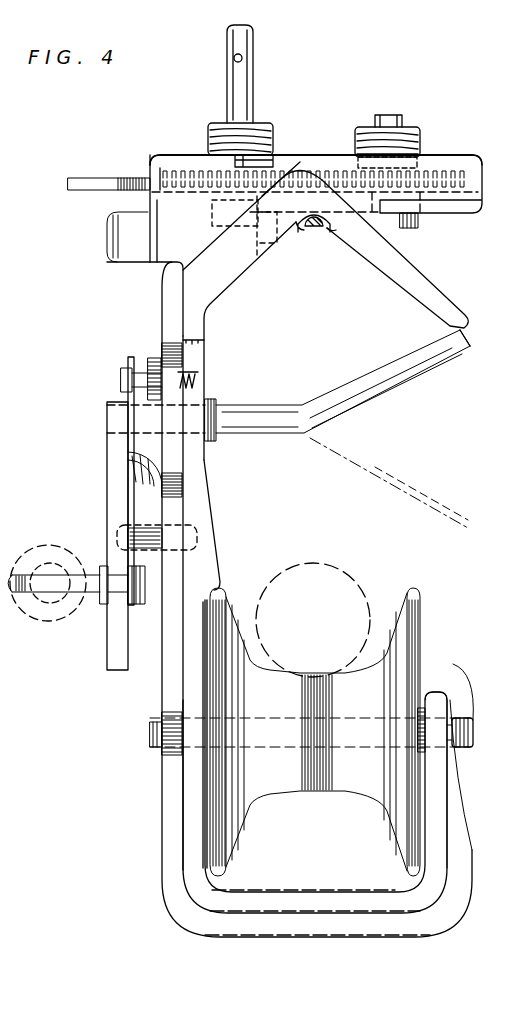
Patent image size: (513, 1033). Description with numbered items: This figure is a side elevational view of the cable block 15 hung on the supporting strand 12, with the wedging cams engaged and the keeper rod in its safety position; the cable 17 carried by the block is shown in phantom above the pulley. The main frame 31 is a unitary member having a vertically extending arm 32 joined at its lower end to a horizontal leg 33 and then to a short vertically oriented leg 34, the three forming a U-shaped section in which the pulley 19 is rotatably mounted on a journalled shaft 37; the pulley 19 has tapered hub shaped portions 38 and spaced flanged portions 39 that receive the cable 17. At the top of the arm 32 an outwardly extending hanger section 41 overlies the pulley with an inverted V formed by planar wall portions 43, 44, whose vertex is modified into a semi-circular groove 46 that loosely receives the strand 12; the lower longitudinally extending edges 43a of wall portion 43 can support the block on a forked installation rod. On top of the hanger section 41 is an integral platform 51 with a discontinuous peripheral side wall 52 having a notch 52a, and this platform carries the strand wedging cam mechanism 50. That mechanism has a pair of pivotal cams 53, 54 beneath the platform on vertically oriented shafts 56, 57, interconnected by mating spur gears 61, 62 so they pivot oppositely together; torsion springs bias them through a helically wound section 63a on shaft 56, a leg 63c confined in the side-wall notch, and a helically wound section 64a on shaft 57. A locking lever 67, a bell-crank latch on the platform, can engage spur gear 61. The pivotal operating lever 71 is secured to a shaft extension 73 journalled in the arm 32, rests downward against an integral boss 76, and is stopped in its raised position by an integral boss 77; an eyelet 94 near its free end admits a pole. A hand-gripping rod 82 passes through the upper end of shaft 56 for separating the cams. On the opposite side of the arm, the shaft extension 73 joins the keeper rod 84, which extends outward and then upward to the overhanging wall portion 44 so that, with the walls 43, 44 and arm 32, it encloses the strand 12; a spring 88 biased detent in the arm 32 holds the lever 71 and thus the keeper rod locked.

The supporting strand 12 is at (312, 232).
The cable block 15 is at (418, 377).
The cable 17 is at (340, 562).
The pulley 19 is at (205, 808).
The main frame 31 is at (150, 329).
The vertically extending arm 32 is at (170, 781).
The horizontal leg 33 is at (215, 927).
The short vertically oriented leg 34 is at (440, 765).
The journalled shaft 37 is at (465, 690).
The tapered hub shaped portions 38 is at (332, 796).
The flanged portions 39 is at (226, 592).
The hanger section 41 is at (190, 251).
The planar wall portion 43 is at (226, 290).
The lower longitudinally extending edges 43a is at (208, 345).
The upper overhanging wall portion 44 is at (404, 275).
The semi-circular groove 46 is at (328, 232).
The strand wedging cam mechanism 50 is at (350, 74).
The platform 51 is at (447, 214).
The peripheral side wall 52 is at (328, 154).
The notch 52a is at (282, 168).
The pivotal cam 53 is at (258, 244).
The pivotal cam 54 is at (410, 229).
The vertically oriented shaft 56 is at (253, 80).
The vertically oriented shaft 57 is at (382, 113).
The spur gear 61 is at (172, 167).
The spur gear 62 is at (443, 172).
The helically wound section 63a is at (220, 130).
The leg 63c is at (236, 162).
The helically wound section 64a is at (410, 130).
The locking lever 67 is at (124, 186).
The operating lever 71 is at (107, 500).
The shaft extension 73 is at (126, 436).
The integral boss 76 is at (148, 530).
The integral boss 77 is at (112, 264).
The hand-gripping rod 82 is at (243, 58).
The keeper rod 84 is at (385, 456).
The spring 88 is at (200, 378).
The eyelet 94 is at (55, 576).